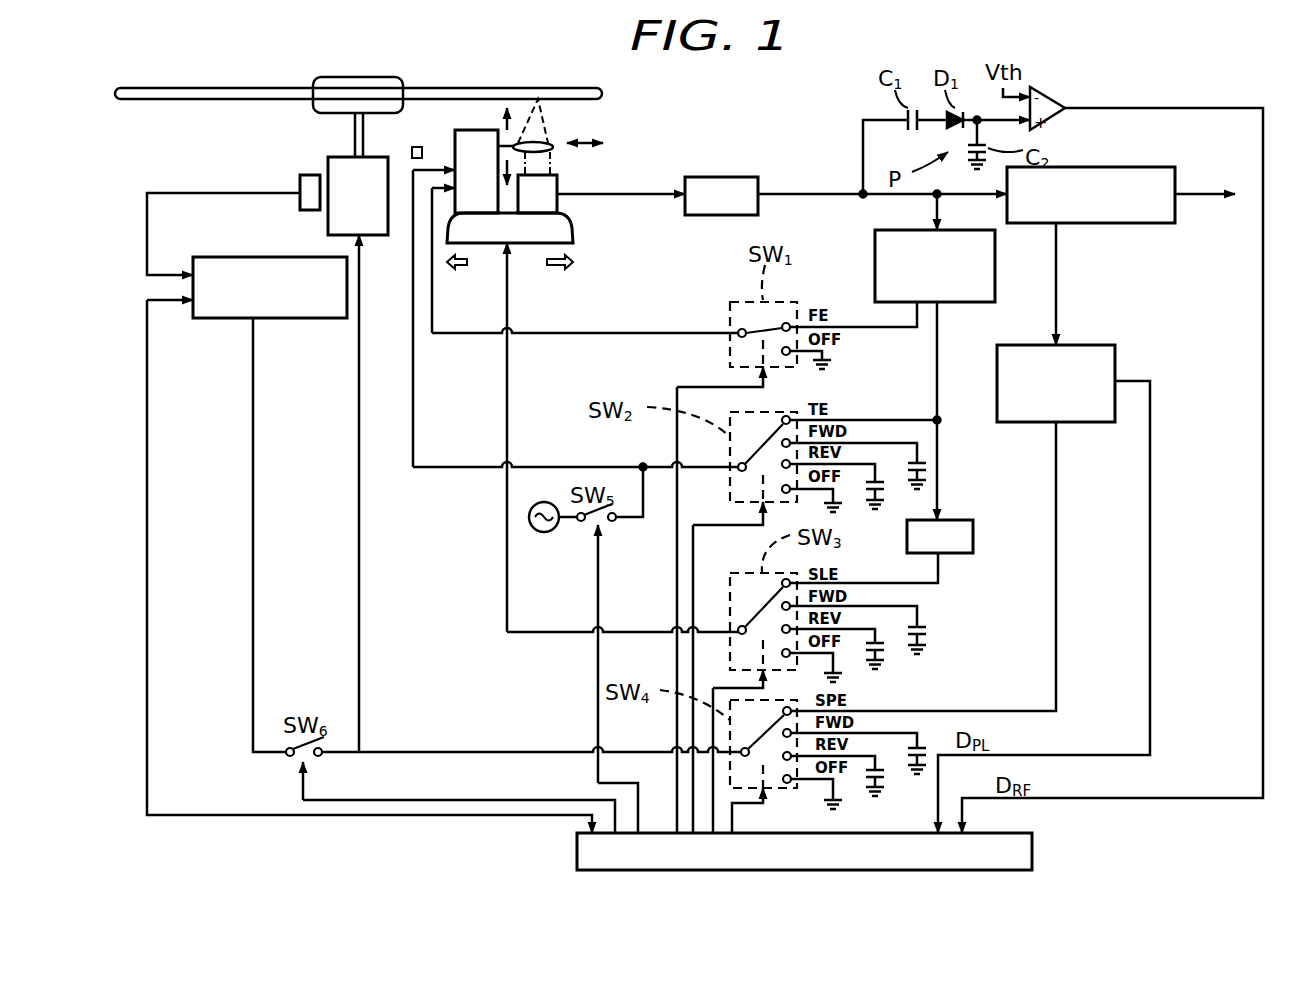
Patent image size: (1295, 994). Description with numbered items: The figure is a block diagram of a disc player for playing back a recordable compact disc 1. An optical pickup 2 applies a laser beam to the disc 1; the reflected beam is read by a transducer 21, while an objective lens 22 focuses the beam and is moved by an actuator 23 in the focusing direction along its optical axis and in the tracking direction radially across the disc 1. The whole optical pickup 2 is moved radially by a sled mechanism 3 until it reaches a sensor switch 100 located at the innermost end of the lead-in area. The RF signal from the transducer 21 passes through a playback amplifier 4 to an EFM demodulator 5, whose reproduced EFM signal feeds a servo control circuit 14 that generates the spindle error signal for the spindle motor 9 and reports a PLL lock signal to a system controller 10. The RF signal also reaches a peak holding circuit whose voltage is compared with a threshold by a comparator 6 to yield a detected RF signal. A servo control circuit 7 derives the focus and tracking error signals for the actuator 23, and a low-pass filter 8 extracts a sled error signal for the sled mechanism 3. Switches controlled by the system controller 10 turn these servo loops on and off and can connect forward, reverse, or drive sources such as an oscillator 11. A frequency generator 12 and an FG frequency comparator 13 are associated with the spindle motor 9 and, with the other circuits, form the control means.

The disc 1 is at (140, 100).
The optical pickup 2 is at (618, 127).
The sled mechanism 3 is at (485, 245).
The playback amplifier 4 is at (712, 177).
The EFM demodulator 5 is at (1140, 167).
The comparator 6 is at (1058, 94).
The servo control circuit 7 is at (995, 262).
The low-pass filter 8 is at (963, 520).
The spindle motor 9 is at (335, 157).
The system controller 10 is at (1032, 845).
The oscillator 11 is at (545, 533).
The frequency generator 12 is at (300, 185).
The FG frequency comparator 13 is at (222, 257).
The servo control circuit 14 is at (1098, 345).
The transducer 21 is at (560, 205).
The objective lens 22 is at (558, 152).
The actuator 23 is at (455, 150).
The sensor switch 100 is at (412, 160).